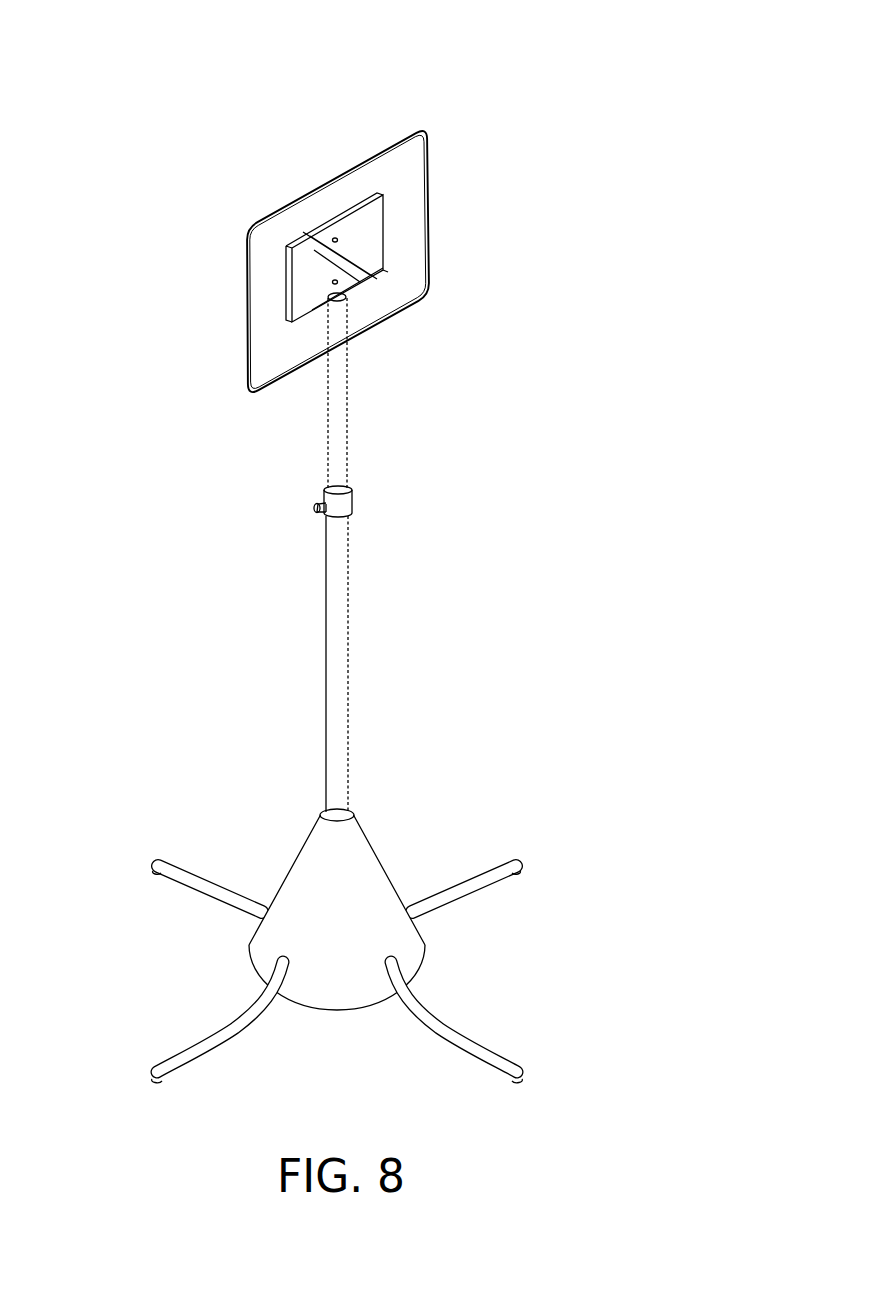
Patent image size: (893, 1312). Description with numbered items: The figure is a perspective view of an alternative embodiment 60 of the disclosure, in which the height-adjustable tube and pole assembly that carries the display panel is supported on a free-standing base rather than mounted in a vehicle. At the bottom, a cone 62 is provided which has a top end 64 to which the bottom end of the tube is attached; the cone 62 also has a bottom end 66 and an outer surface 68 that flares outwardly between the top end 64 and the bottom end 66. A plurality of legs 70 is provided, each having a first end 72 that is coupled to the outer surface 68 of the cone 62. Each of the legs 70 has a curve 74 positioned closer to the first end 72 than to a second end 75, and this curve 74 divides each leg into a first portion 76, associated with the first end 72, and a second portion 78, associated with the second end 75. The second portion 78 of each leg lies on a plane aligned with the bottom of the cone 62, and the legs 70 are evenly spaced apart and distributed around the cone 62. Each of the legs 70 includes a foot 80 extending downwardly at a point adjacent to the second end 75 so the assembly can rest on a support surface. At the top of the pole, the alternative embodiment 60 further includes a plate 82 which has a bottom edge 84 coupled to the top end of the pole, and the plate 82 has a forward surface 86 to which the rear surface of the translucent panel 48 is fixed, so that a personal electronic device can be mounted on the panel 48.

The alternative embodiment 60 is at (458, 110).
The panel 48 is at (250, 229).
The forward surface 86 is at (374, 230).
The plate 82 is at (388, 272).
The bottom edge 84 is at (312, 310).
The top end 64 is at (305, 555).
The cone 62 is at (342, 935).
The outer surface 68 is at (312, 863).
The bottom end 66 is at (337, 1012).
The legs 70 is at (346, 994).
The first end 72 is at (388, 957).
The first portion 76 is at (270, 952).
The curve 74 is at (178, 1093).
The second end 75 is at (527, 1083).
The second portion 78 is at (197, 1060).
The foot 80 is at (156, 1086).